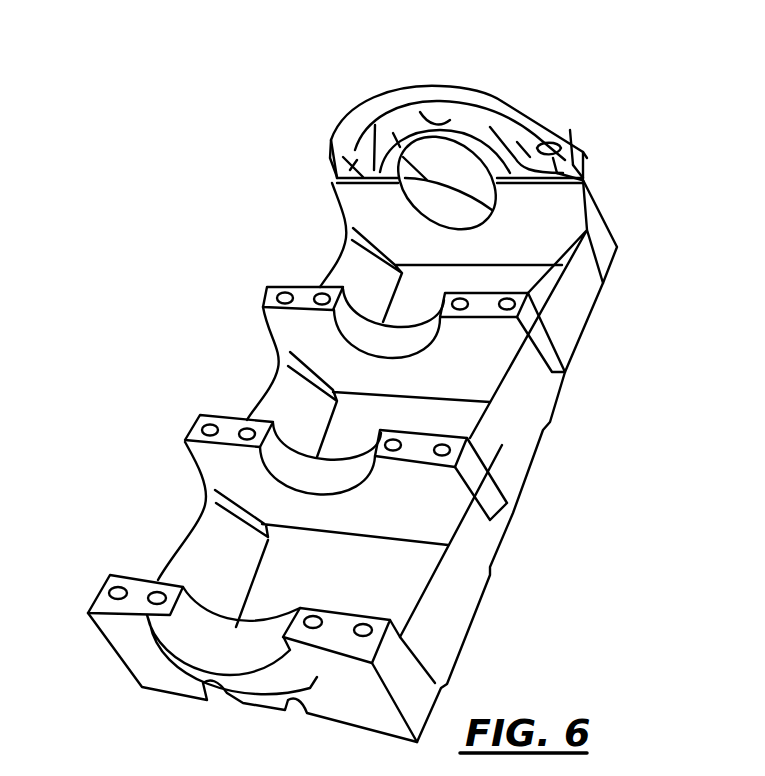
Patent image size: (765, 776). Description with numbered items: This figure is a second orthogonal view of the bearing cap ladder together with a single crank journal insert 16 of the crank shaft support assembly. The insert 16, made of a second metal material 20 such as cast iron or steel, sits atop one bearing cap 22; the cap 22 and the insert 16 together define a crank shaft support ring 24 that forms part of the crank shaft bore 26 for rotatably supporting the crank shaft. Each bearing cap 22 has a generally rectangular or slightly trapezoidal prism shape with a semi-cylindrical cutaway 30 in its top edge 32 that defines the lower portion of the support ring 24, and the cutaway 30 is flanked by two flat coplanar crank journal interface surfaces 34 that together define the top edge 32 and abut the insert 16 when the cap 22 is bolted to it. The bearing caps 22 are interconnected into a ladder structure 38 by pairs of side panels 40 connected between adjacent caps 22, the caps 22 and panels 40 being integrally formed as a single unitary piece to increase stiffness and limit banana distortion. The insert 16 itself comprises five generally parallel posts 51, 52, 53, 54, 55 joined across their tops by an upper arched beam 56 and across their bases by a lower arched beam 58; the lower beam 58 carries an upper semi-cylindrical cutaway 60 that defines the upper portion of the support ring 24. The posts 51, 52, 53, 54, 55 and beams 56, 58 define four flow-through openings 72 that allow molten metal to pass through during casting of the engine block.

The crank journal insert 16 is at (517, 115).
The second metal material 20 is at (575, 143).
The bearing cap 22 is at (336, 200).
The crank shaft support ring 24 is at (470, 205).
The crank shaft bore 26 is at (447, 183).
The semi-cylindrical cutaway 30 is at (457, 213).
The top edge 32 is at (127, 613).
The crank journal interface surface 34 is at (233, 418).
The ladder structure 38 is at (530, 481).
The side panel 40 is at (347, 257).
The post 51 is at (340, 160).
The post 52 is at (380, 137).
The post 53 is at (436, 107).
The post 54 is at (512, 145).
The post 55 is at (580, 157).
The upper arched beam 56 is at (402, 105).
The lower arched beam 58 is at (490, 127).
The upper semi-cylindrical cutaway 60 is at (417, 145).
The flow-through opening 72 is at (397, 125).